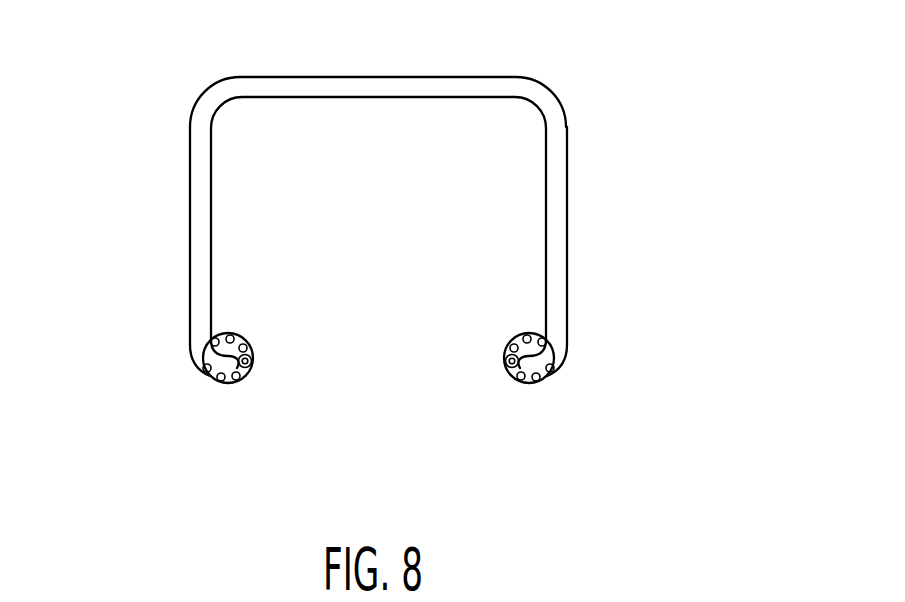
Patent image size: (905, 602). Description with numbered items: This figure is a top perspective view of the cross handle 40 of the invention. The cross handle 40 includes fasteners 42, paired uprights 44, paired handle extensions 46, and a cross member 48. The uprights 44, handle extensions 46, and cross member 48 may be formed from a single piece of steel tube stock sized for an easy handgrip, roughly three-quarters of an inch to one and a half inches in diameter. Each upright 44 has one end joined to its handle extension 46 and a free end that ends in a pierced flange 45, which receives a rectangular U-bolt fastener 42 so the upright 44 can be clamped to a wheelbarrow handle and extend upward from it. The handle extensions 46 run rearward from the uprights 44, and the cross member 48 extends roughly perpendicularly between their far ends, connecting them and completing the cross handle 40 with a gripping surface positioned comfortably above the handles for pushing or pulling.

The cross handle 40 is at (372, 248).
The fasteners 42 is at (508, 377).
The paired uprights 44 is at (217, 375).
The flange 45 is at (233, 387).
The paired handle extensions 46 is at (202, 255).
The cross member 48 is at (487, 87).